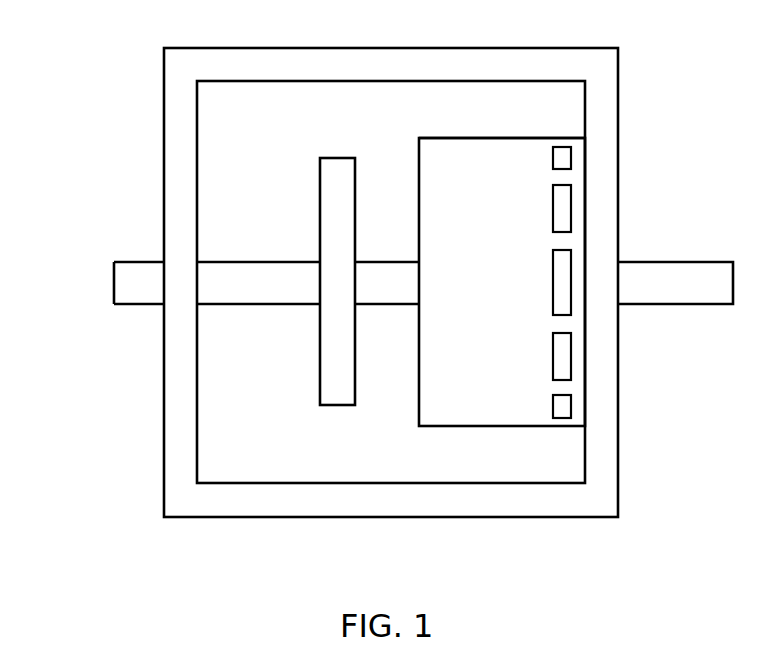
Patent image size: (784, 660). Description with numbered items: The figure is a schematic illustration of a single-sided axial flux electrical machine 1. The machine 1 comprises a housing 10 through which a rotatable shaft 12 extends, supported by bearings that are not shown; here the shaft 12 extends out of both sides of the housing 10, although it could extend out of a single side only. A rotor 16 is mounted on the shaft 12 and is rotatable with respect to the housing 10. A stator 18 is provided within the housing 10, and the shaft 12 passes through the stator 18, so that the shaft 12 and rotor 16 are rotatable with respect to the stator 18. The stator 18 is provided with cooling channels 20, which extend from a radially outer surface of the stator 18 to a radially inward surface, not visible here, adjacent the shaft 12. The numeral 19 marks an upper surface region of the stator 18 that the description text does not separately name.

The machine 1 is at (92, 122).
The housing 10 is at (228, 498).
The rotatable shaft 12 is at (690, 270).
The rotor 16 is at (338, 370).
The stator 18 is at (484, 414).
The surface of circuit board 19 is at (505, 138).
The cooling channels 20 is at (571, 200).